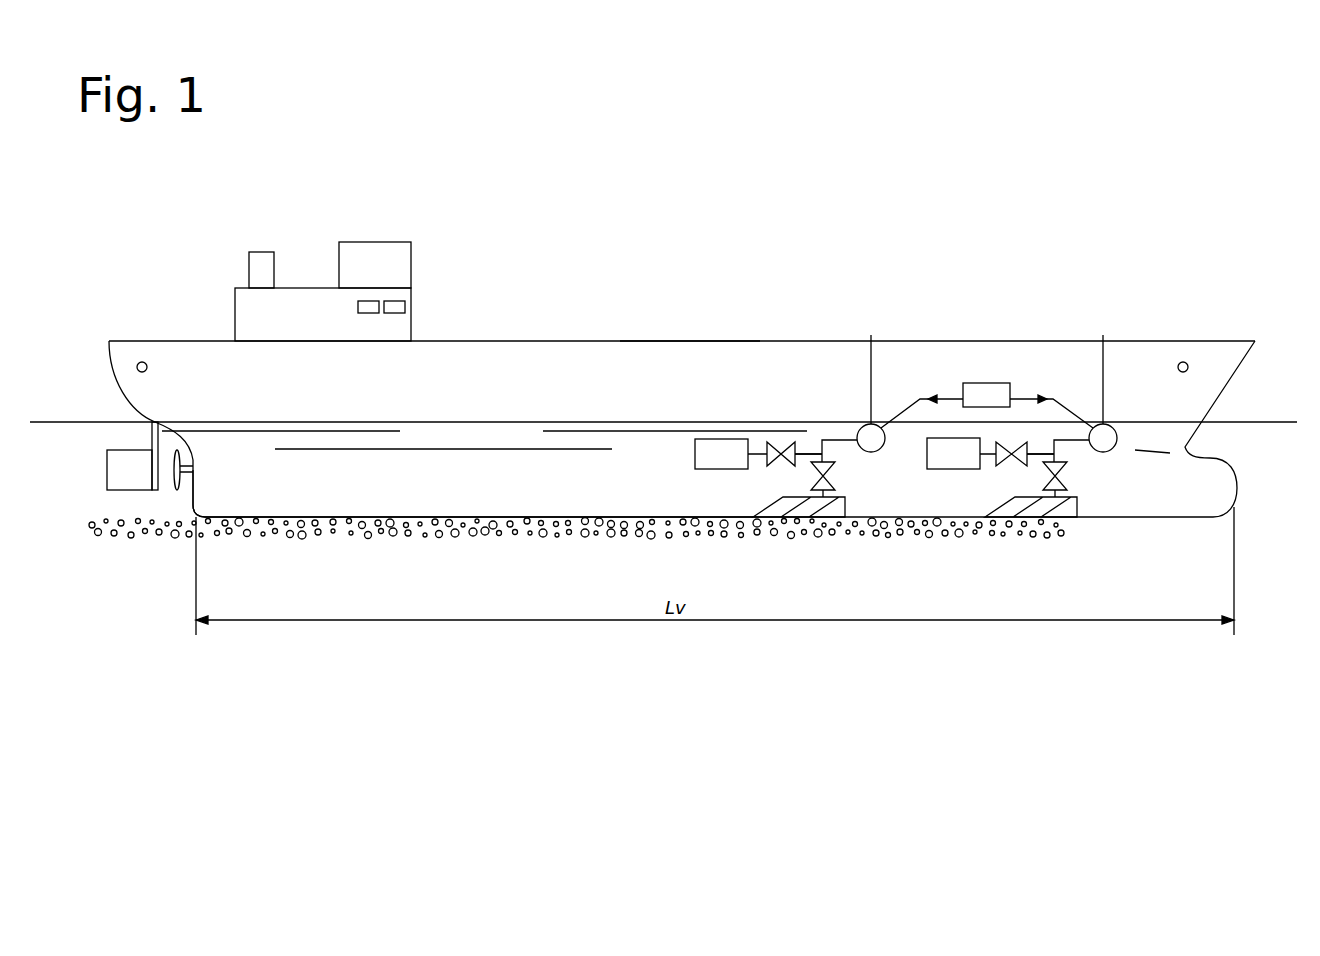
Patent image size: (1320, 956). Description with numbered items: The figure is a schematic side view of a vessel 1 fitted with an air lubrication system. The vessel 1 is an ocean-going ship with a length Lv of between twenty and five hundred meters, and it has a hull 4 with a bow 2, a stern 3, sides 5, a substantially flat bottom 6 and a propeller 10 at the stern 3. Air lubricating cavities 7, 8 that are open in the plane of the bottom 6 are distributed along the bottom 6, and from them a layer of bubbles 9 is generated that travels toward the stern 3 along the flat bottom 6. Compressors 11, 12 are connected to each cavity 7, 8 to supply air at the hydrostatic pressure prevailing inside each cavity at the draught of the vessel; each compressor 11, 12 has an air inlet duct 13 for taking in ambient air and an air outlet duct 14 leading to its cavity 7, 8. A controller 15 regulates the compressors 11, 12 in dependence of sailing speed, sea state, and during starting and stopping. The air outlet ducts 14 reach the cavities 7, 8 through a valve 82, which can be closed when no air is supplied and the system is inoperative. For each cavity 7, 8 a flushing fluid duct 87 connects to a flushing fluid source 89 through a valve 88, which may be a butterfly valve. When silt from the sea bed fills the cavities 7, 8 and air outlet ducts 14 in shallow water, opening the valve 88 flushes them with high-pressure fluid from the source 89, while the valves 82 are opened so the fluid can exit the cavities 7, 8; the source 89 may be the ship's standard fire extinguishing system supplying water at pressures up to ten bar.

The vessel 1 is at (143, 315).
The bow 2 is at (1183, 407).
The stern 3 is at (195, 490).
The hull 4 is at (493, 383).
The sides 5 is at (677, 360).
The bottom 6 is at (588, 517).
The air lubricating cavity 7 is at (830, 505).
The air lubricating cavity 8 is at (1042, 505).
The bubbles 9 is at (483, 535).
The propeller 10 is at (175, 484).
The compressor 11 is at (863, 427).
The compressor 12 is at (1107, 433).
The air inlet duct 13 is at (872, 377).
The air outlet duct 14 is at (820, 443).
The controller 15 is at (973, 383).
The valve 82 is at (830, 480).
The flushing fluid duct 87 is at (797, 457).
The valve 88 is at (778, 445).
The flushing fluid source 89 is at (723, 462).